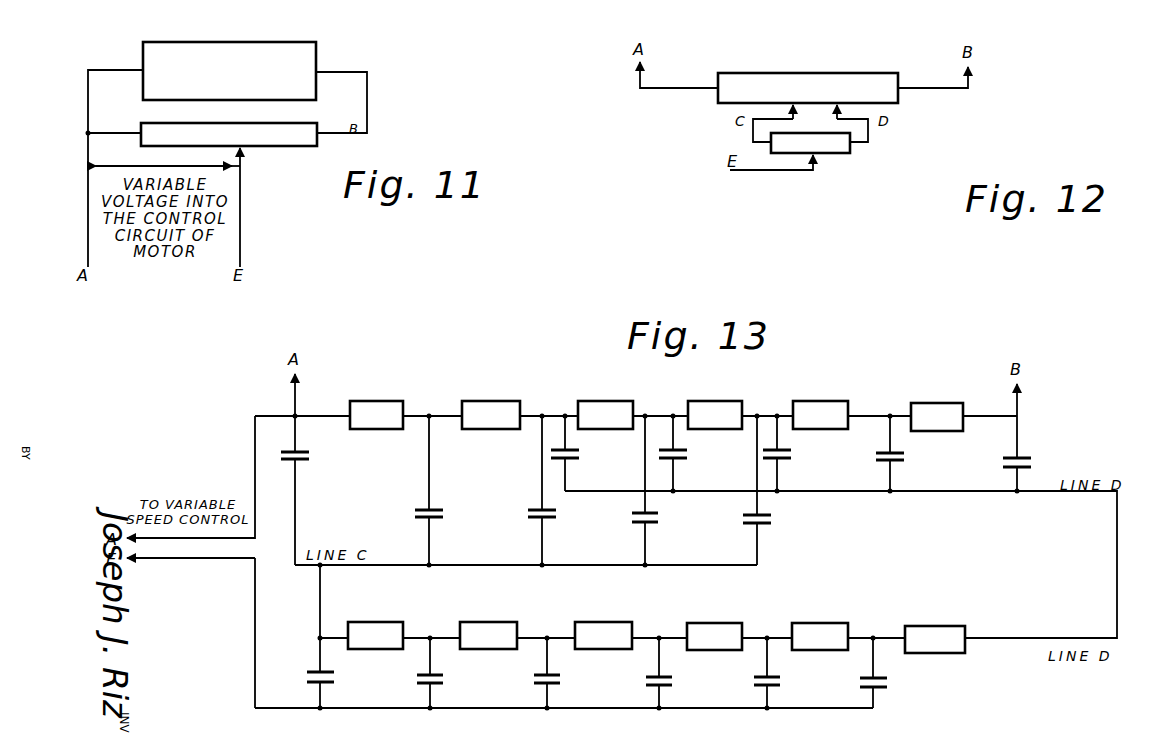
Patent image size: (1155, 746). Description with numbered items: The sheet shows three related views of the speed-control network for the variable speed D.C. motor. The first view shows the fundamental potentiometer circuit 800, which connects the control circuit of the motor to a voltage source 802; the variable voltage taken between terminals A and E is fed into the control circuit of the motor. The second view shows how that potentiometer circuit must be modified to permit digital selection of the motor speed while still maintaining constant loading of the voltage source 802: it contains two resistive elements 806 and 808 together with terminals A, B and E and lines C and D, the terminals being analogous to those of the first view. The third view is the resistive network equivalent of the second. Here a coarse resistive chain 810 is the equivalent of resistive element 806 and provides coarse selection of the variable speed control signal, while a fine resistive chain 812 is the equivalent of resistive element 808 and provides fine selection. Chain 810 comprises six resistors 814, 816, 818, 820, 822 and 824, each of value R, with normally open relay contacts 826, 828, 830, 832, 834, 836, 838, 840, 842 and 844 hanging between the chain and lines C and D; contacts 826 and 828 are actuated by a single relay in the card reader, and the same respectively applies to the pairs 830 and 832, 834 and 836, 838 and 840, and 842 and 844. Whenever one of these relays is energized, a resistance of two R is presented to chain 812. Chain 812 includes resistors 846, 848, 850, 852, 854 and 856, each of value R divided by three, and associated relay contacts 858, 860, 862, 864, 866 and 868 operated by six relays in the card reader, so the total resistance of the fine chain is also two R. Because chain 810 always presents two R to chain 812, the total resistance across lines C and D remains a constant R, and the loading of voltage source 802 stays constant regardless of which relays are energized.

In FIG. 11, the potentiometer circuit 800 is at (298, 122).
In FIG. 11, the voltage source 802 is at (300, 49).
In FIG. 12, the resistive element 806 is at (838, 65).
In FIG. 12, the resistive element 808 is at (838, 153).
In FIG. 13, the resistive chain 810 is at (500, 377).
In FIG. 13, the resistive chain 812 is at (508, 602).
In FIG. 13, the resistor 814 is at (372, 398).
In FIG. 13, the resistor 816 is at (487, 398).
In FIG. 13, the resistor 818 is at (603, 388).
In FIG. 13, the resistor 820 is at (690, 408).
In FIG. 13, the resistor 822 is at (828, 387).
In FIG. 13, the resistor 824 is at (940, 389).
In FIG. 13, the relay contacts 826 is at (309, 454).
In FIG. 13, the relay contacts 828 is at (579, 452).
In FIG. 13, the relay contacts 830 is at (458, 502).
In FIG. 13, the relay contacts 832 is at (687, 452).
In FIG. 13, the relay contacts 834 is at (528, 513).
In FIG. 13, the relay contacts 836 is at (791, 452).
In FIG. 13, the relay contacts 838 is at (660, 517).
In FIG. 13, the relay contacts 840 is at (904, 455).
In FIG. 13, the relay contacts 842 is at (772, 518).
In FIG. 13, the relay contacts 844 is at (1003, 462).
In FIG. 13, the resistor 846 is at (365, 620).
In FIG. 13, the resistor 848 is at (492, 620).
In FIG. 13, the resistor 850 is at (592, 611).
In FIG. 13, the resistor 852 is at (703, 627).
In FIG. 13, the resistor 854 is at (810, 627).
In FIG. 13, the resistor 856 is at (910, 626).
In FIG. 13, the relay contacts 858 is at (334, 675).
In FIG. 13, the relay contacts 860 is at (443, 677).
In FIG. 13, the relay contacts 862 is at (560, 677).
In FIG. 13, the relay contacts 864 is at (672, 679).
In FIG. 13, the relay contacts 866 is at (780, 679).
In FIG. 13, the relay contacts 868 is at (887, 681).